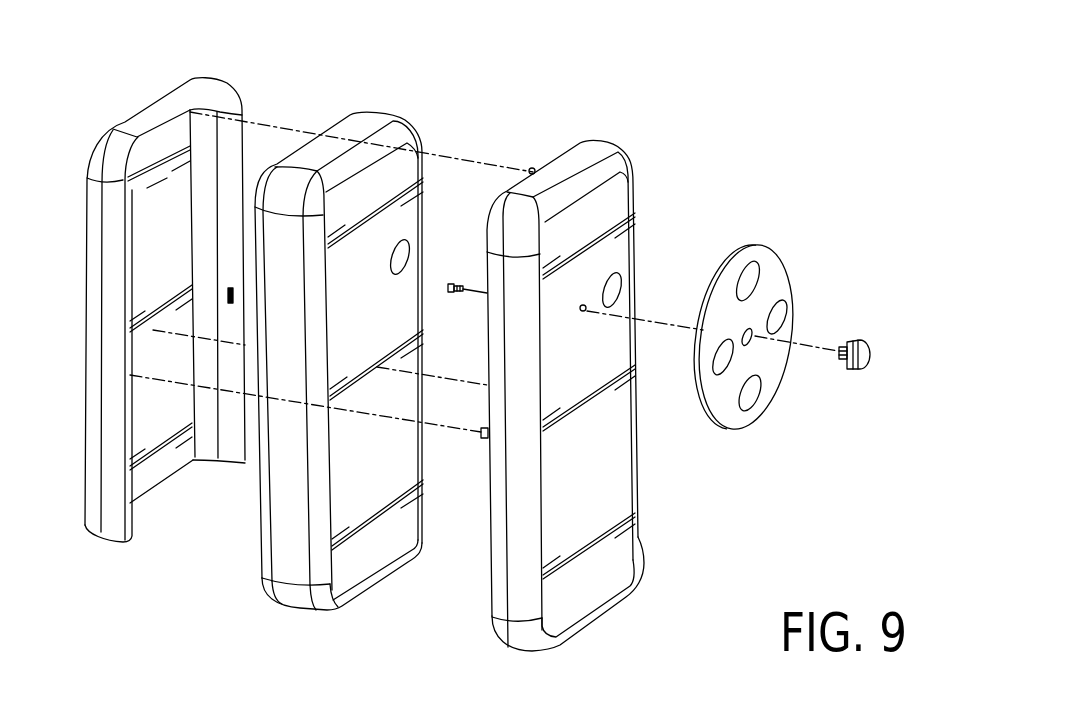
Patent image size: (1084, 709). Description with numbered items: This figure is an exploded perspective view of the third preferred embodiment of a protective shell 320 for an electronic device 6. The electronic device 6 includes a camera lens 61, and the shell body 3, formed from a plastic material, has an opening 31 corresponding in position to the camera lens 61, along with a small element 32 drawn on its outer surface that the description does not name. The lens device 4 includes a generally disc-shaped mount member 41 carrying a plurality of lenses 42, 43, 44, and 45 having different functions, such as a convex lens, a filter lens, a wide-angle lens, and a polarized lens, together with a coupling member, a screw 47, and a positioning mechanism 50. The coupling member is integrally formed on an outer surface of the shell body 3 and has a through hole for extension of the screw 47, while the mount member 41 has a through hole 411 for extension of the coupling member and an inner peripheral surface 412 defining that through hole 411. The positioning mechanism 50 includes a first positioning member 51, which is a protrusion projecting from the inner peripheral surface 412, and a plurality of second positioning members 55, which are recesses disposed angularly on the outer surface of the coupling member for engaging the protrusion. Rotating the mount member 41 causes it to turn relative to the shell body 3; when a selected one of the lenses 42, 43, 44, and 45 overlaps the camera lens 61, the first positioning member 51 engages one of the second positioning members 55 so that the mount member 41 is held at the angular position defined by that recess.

The shell body 3 is at (568, 185).
The lens device 4 is at (778, 238).
The electronic device 6 is at (307, 122).
The opening 31 is at (614, 292).
The positioning pin 32 is at (586, 313).
The mount member 41 is at (763, 388).
The lens 42 is at (779, 309).
The lens 43 is at (747, 270).
The lens 44 is at (722, 374).
The lens 45 is at (745, 406).
The screw 47 is at (454, 281).
The positioning mechanism 50 is at (836, 364).
The first positioning member 51 is at (746, 330).
The second positioning members 55 is at (843, 363).
The camera lens 61 is at (405, 241).
The protective shell 320 is at (651, 126).
The through hole 411 is at (758, 320).
The inner peripheral surface 412 is at (753, 333).